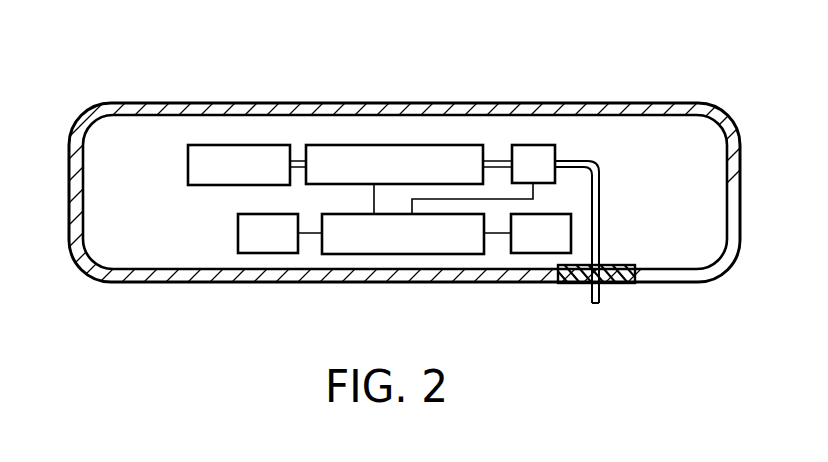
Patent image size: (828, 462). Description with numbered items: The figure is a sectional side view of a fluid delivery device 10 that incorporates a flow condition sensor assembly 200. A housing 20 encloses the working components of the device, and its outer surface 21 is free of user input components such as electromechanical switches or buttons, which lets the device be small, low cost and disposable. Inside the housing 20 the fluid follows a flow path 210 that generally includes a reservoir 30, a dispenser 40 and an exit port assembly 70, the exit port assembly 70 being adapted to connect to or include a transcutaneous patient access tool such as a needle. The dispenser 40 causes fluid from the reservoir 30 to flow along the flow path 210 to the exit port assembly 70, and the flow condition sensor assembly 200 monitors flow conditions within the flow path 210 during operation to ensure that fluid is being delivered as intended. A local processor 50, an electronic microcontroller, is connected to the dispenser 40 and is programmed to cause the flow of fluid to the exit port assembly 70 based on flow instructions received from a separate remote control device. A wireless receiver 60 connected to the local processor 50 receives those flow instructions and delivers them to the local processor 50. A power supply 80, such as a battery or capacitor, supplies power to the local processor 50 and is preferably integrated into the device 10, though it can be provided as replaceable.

The fluid delivery device 10 is at (405, 176).
The housing 20 is at (490, 103).
The outer surface 21 is at (600, 98).
The reservoir 30 is at (258, 153).
The dispenser 40 is at (397, 145).
The local processor 50 is at (407, 242).
The wireless receiver 60 is at (266, 244).
The exit port assembly 70 is at (612, 284).
The power supply 80 is at (537, 243).
The flow condition sensor assembly 200 is at (566, 152).
The flow path 210 is at (616, 197).